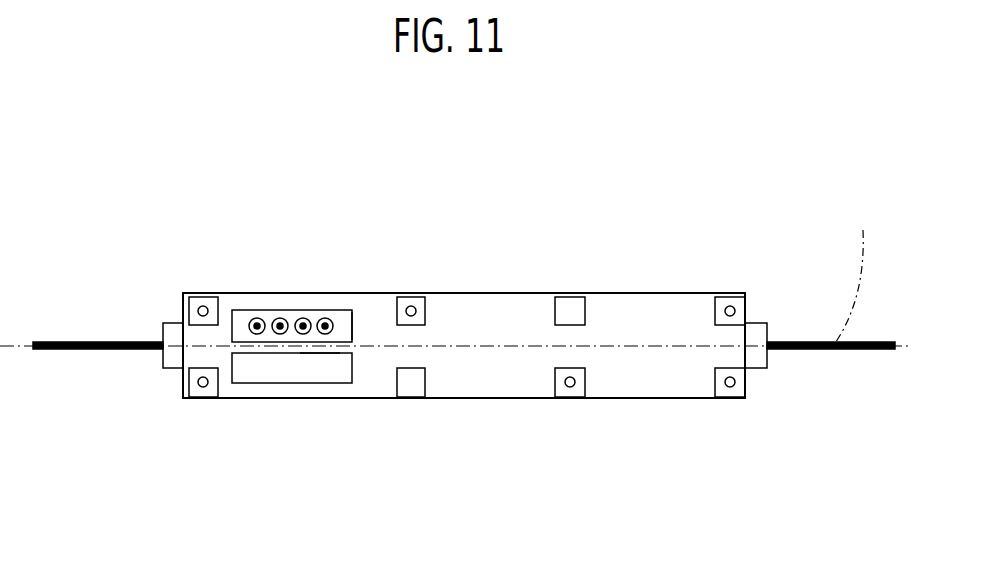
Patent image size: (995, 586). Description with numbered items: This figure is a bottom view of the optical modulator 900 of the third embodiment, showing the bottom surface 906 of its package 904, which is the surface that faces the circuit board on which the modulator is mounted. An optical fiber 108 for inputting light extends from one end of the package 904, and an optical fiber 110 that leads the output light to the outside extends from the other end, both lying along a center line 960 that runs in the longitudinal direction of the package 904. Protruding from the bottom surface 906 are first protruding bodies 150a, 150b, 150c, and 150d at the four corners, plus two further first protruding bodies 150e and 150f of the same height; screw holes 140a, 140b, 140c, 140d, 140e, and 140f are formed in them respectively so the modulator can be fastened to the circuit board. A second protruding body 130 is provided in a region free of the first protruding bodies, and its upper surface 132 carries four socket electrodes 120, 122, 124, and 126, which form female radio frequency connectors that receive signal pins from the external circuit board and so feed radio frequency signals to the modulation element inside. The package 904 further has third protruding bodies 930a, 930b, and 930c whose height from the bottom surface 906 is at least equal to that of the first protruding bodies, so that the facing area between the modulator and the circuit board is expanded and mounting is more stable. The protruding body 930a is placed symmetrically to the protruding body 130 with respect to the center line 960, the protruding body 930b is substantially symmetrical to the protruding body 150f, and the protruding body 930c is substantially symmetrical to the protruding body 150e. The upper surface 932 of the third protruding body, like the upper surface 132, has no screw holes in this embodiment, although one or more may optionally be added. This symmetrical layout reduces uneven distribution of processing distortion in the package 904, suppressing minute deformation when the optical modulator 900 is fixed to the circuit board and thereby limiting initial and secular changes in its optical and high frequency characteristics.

The optical modulator 900 is at (710, 134).
The package 904 is at (464, 381).
The bottom surface 906 is at (455, 402).
The optical fiber 108 is at (98, 397).
The optical fiber 110 is at (831, 398).
The center line 960 is at (860, 269).
The protruding body 130 is at (257, 273).
The upper surface 132 is at (397, 282).
The socket electrode 120 is at (246, 277).
The socket electrode 122 is at (285, 255).
The socket electrode 124 is at (320, 272).
The socket electrode 126 is at (358, 263).
The protruding body 930a is at (292, 421).
The upper surface 932 is at (330, 426).
The protruding body 150a is at (188, 446).
The protruding body 150b is at (145, 264).
The protruding body 150c is at (750, 260).
The protruding body 150d is at (773, 439).
The protruding body 150e is at (543, 427).
The protruding body 150f is at (462, 259).
The screw hole 140a is at (165, 411).
The screw hole 140b is at (152, 296).
The screw hole 140c is at (774, 288).
The screw hole 140d is at (733, 423).
The screw hole 140e is at (585, 445).
The screw hole 140f is at (482, 282).
The protruding body 930b is at (396, 466).
The protruding body 930c is at (616, 253).